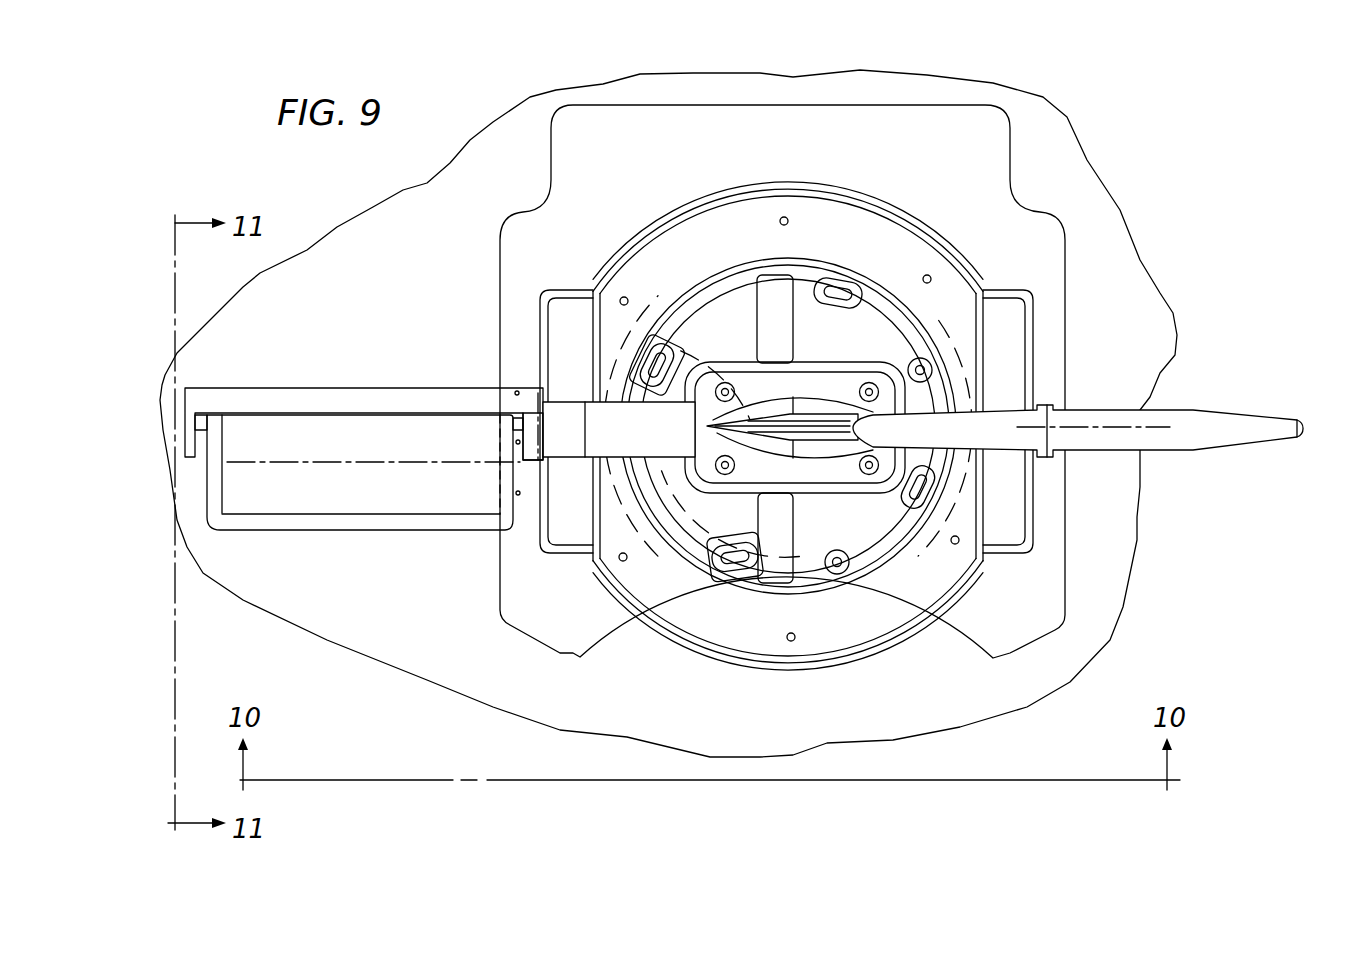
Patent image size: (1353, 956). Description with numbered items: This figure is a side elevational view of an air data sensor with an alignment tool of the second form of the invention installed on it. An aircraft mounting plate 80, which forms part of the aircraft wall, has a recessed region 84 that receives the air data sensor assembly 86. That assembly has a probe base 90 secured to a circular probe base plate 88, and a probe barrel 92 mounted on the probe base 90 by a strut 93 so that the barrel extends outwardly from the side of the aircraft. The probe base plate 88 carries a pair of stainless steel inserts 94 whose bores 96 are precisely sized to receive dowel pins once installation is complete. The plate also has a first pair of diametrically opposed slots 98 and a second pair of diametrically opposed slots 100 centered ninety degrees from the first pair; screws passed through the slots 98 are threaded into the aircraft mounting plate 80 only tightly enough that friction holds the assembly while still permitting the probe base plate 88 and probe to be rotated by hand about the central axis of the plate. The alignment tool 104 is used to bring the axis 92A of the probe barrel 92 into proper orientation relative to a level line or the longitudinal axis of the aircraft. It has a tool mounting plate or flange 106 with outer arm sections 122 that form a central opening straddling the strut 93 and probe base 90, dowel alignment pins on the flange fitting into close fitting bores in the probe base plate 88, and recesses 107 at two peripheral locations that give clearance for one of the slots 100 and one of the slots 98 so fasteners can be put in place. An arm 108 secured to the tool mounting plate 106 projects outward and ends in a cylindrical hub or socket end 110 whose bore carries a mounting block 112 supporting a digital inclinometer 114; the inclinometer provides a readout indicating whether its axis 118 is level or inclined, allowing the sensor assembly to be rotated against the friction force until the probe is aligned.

The aircraft mounting plate 80 is at (572, 305).
The recessed region 84 is at (1003, 312).
The air data sensor assembly 86 is at (1016, 394).
The probe base plate 88 is at (890, 335).
The probe base 90 is at (764, 390).
The probe barrel 92 is at (1097, 408).
The axis of the probe barrel 92A is at (1115, 437).
The strut 93 is at (816, 414).
The stainless steel inserts 94 is at (893, 340).
The bores of the inserts 96 is at (932, 369).
The first pair of slots 98 is at (840, 290).
The second pair of slots 100 is at (652, 345).
The alignment tool 104 is at (662, 501).
The tool mounting plate 106 is at (695, 517).
The recesses 107 is at (688, 347).
The arm 108 is at (640, 443).
The hub or socket end 110 is at (563, 400).
The mounting block 112 is at (434, 388).
The digital inclinometer 114 is at (430, 493).
The axis of the inclinometer 118 is at (362, 462).
The outer arm sections 122 is at (773, 273).